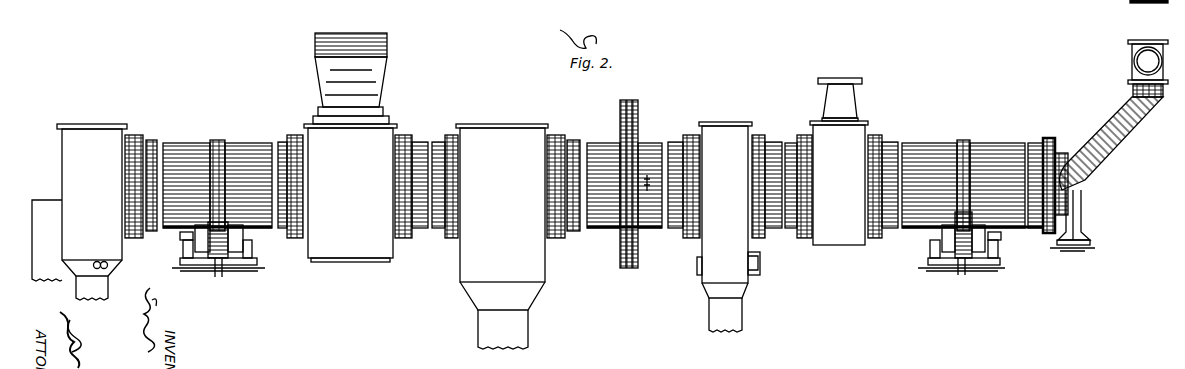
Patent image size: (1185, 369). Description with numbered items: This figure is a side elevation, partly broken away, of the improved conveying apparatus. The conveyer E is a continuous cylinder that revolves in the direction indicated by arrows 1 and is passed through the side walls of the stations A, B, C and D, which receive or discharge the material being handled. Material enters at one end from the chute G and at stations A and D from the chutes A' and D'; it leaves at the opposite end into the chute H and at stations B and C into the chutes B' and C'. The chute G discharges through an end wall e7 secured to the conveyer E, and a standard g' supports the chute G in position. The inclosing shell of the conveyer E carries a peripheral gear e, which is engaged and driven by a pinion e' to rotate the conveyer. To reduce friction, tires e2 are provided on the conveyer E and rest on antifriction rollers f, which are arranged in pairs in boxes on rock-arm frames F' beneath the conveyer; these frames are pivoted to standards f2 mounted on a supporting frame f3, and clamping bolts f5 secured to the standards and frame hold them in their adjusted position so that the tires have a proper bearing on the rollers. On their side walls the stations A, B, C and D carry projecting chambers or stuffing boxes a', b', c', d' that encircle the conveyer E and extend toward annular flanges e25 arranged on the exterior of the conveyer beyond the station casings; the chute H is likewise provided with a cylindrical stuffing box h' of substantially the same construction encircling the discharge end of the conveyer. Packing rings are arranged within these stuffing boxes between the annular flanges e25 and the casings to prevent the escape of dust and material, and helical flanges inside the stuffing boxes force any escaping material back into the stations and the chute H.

The chute H is at (106, 289).
The stuffing box h' is at (134, 176).
The conveyer E is at (1038, 141).
The tires e2 is at (965, 140).
The annular flanges e25 is at (890, 137).
The stuffing box d' is at (357, 175).
The station D is at (355, 181).
The chute D' is at (364, 78).
The stuffing box c' is at (506, 173).
The station C is at (502, 192).
The chute C' is at (504, 315).
The peripheral gear e is at (629, 173).
The pinion e' is at (594, 25).
The arrows 1 is at (649, 183).
The stuffing box b' is at (729, 173).
The station B is at (728, 192).
The chute B' is at (734, 307).
The stuffing box a' is at (840, 173).
The station A is at (847, 171).
The chute A' is at (840, 99).
The end wall e7 is at (1060, 165).
The chute G is at (1097, 135).
The standard g' is at (1075, 220).
The roller bearing F' is at (590, 253).
The antifriction rollers f is at (589, 279).
The standards f2 is at (998, 243).
The supporting frame f3 is at (998, 258).
The clamping bolts f5 is at (932, 242).